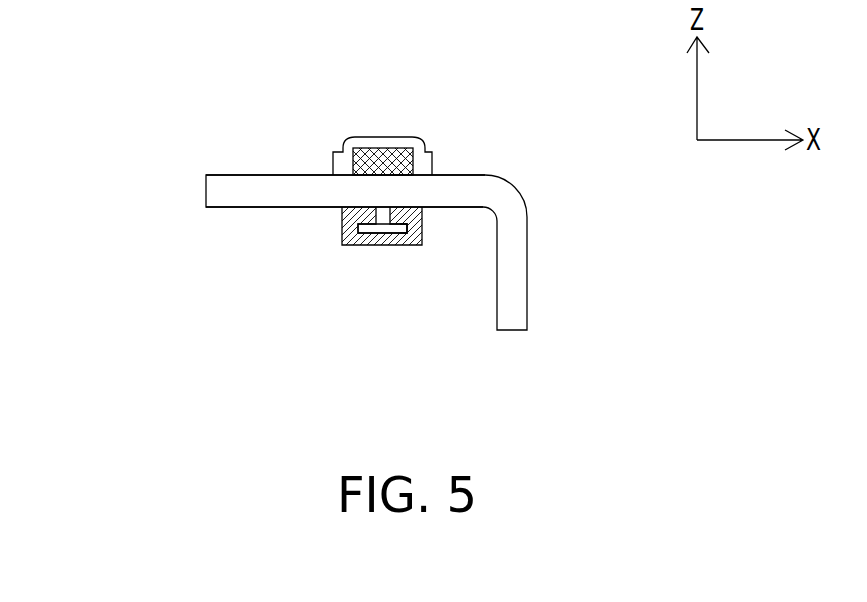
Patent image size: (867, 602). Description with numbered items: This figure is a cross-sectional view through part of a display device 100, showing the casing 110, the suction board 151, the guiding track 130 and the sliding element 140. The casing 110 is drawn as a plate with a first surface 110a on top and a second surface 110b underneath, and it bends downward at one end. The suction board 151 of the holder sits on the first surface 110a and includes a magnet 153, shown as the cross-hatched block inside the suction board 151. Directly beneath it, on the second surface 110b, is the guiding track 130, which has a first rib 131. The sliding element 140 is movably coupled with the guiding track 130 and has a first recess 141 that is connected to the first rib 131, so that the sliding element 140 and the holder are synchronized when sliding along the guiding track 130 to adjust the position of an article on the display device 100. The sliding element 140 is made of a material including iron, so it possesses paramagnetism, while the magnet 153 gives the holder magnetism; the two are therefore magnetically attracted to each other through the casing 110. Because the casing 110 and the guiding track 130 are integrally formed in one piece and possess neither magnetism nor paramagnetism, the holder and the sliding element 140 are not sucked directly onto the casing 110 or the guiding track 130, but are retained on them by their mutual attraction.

The display device 100 is at (115, 48).
The casing 110 is at (518, 270).
The first surface 110a is at (277, 175).
The second surface 110b is at (233, 207).
The guiding track 130 is at (380, 228).
The first rib 131 is at (397, 232).
The sliding element 140 is at (342, 235).
The first recess 141 is at (366, 229).
The suction board 151 is at (417, 153).
The magnet 153 is at (359, 152).